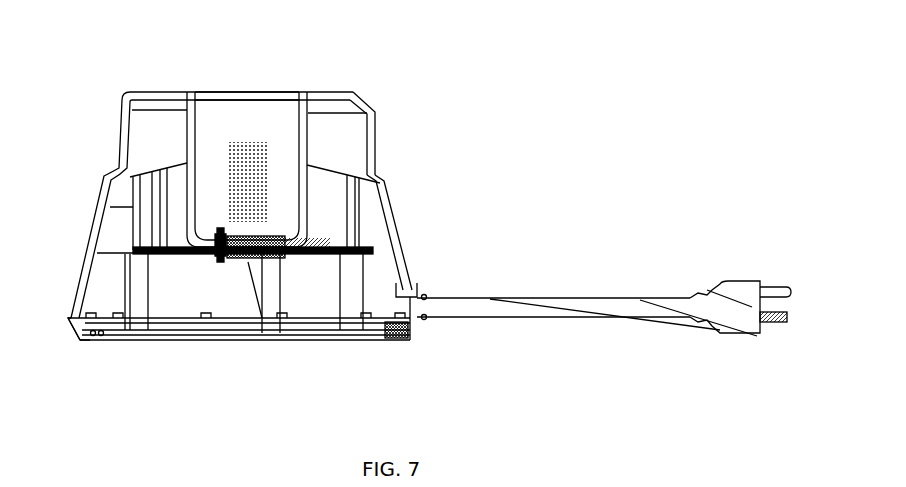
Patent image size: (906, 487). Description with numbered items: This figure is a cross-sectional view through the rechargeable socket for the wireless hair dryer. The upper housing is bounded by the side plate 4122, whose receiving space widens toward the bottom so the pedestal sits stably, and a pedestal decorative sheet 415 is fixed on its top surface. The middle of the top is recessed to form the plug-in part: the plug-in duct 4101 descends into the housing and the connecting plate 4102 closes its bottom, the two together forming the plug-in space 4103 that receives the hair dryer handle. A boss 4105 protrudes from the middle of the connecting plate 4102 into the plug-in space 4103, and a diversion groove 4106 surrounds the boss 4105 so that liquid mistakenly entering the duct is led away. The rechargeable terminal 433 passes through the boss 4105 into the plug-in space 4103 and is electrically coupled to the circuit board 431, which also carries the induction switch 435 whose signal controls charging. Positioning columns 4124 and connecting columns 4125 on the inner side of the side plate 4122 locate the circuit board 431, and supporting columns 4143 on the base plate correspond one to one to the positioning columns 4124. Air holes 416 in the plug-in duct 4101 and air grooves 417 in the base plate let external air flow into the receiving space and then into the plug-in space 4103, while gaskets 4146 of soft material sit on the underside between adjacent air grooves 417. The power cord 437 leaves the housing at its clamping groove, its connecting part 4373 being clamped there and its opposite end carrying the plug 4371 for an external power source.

The plug-in duct 4101 is at (185, 135).
The connecting plate 4102 is at (310, 341).
The plug-in space 4103 is at (260, 113).
The boss 4105 is at (277, 232).
The diversion groove 4106 is at (219, 226).
The pedestal decorative sheet 415 is at (337, 93).
The air holes 416 is at (242, 143).
The air grooves 417 is at (97, 341).
The side plate 4122 is at (376, 128).
The positioning columns 4124 is at (137, 230).
The connecting columns 4125 is at (137, 198).
The supporting columns 4143 is at (139, 320).
The gaskets 4146 is at (349, 341).
The circuit board 431 is at (363, 253).
The rechargeable terminal 433 is at (212, 258).
The induction switch 435 is at (269, 341).
The power cord 437 is at (563, 303).
The plug 4371 is at (747, 290).
The connecting part 4373 is at (423, 293).